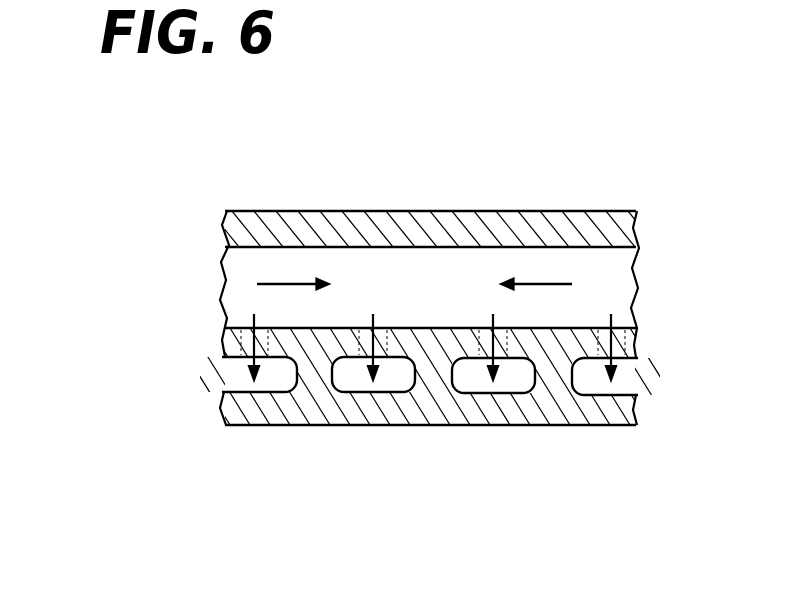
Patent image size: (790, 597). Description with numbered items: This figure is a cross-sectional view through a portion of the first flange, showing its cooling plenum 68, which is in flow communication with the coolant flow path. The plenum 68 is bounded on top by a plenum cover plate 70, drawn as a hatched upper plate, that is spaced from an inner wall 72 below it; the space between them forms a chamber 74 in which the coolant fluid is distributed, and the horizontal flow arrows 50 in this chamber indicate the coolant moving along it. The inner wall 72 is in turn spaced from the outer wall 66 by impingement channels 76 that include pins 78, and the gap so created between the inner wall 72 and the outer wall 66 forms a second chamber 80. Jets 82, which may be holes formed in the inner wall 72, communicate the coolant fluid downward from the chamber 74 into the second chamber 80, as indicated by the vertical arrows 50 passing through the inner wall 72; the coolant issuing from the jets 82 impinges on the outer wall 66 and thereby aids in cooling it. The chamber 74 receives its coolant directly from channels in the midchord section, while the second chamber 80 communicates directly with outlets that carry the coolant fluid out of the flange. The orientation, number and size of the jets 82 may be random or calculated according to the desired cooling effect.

The flow arrows / fluid paths 50 is at (282, 283).
The outer wall 66 is at (490, 427).
The plenum 68 is at (180, 292).
The plenum cover plate 70 is at (462, 210).
The inner wall 72 is at (313, 340).
The chamber 74 is at (240, 265).
The impingement channels 76 is at (371, 395).
The pins 78 is at (313, 378).
The second chamber 80 is at (505, 382).
The jets 82 is at (547, 327).